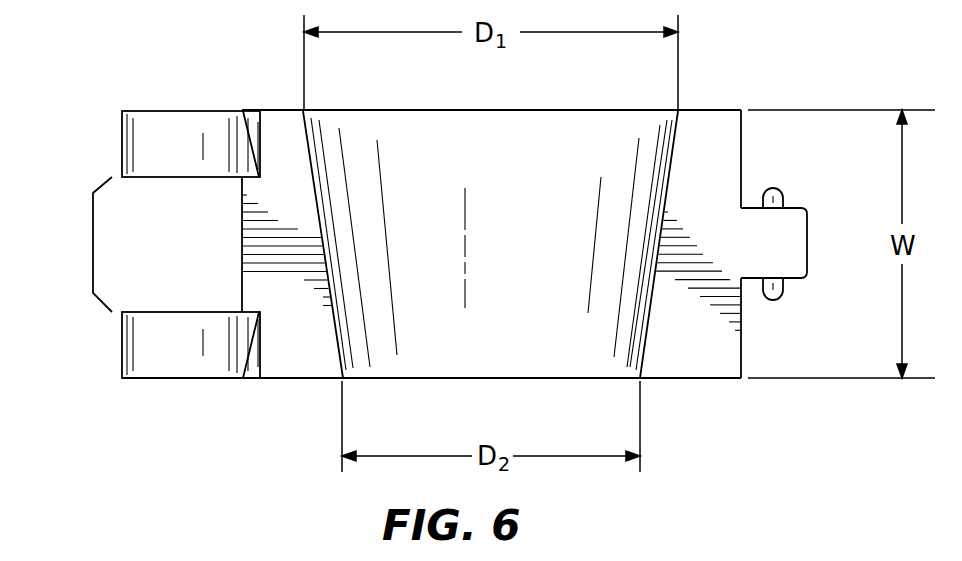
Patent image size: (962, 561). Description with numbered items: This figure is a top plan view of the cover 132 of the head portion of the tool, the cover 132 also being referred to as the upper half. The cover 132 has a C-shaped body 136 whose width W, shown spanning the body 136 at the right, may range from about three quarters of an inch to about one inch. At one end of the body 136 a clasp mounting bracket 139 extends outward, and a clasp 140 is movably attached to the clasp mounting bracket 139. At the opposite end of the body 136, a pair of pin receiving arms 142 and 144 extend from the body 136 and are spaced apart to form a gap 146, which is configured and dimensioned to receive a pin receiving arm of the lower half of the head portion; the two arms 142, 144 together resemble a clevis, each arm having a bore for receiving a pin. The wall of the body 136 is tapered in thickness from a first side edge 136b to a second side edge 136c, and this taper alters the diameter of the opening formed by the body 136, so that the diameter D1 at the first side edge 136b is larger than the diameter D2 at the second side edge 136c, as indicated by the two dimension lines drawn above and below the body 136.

The cover 132 is at (277, 109).
The C-shaped body 136 is at (743, 343).
The first side edge 136b is at (695, 108).
The second side edge 136c is at (285, 380).
The clasp mounting bracket 139 is at (807, 238).
The clasp 140 is at (775, 187).
The first pin receiving arm 142 is at (122, 342).
The second pin receiving arm 144 is at (122, 143).
The gap 146 is at (93, 255).